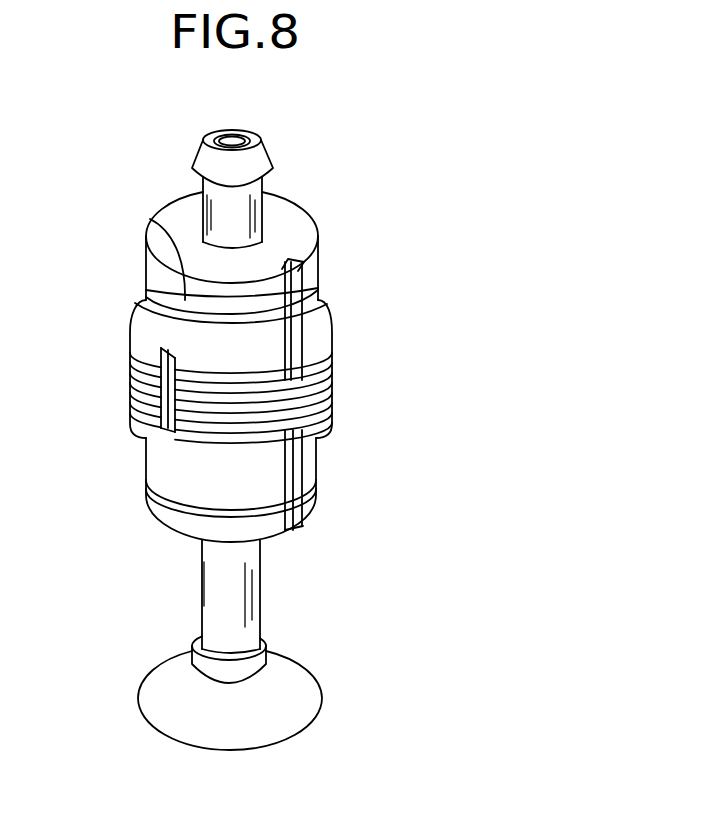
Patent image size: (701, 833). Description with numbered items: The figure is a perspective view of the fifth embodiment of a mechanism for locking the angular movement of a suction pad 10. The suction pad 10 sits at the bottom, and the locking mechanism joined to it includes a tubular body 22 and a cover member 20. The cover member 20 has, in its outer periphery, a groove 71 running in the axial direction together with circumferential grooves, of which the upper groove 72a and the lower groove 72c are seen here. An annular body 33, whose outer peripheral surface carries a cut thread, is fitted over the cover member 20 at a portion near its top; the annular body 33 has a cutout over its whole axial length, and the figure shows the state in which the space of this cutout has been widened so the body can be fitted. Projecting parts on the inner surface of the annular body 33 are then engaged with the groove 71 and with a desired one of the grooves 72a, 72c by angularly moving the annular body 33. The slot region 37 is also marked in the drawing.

The suction pad 10 is at (300, 685).
The cover member 20 is at (292, 175).
The tubular body 22 is at (252, 188).
The annular body 33 is at (328, 400).
The slot 37 is at (135, 400).
The groove 71 is at (330, 340).
The groove 72a is at (158, 226).
The groove 72c is at (192, 507).